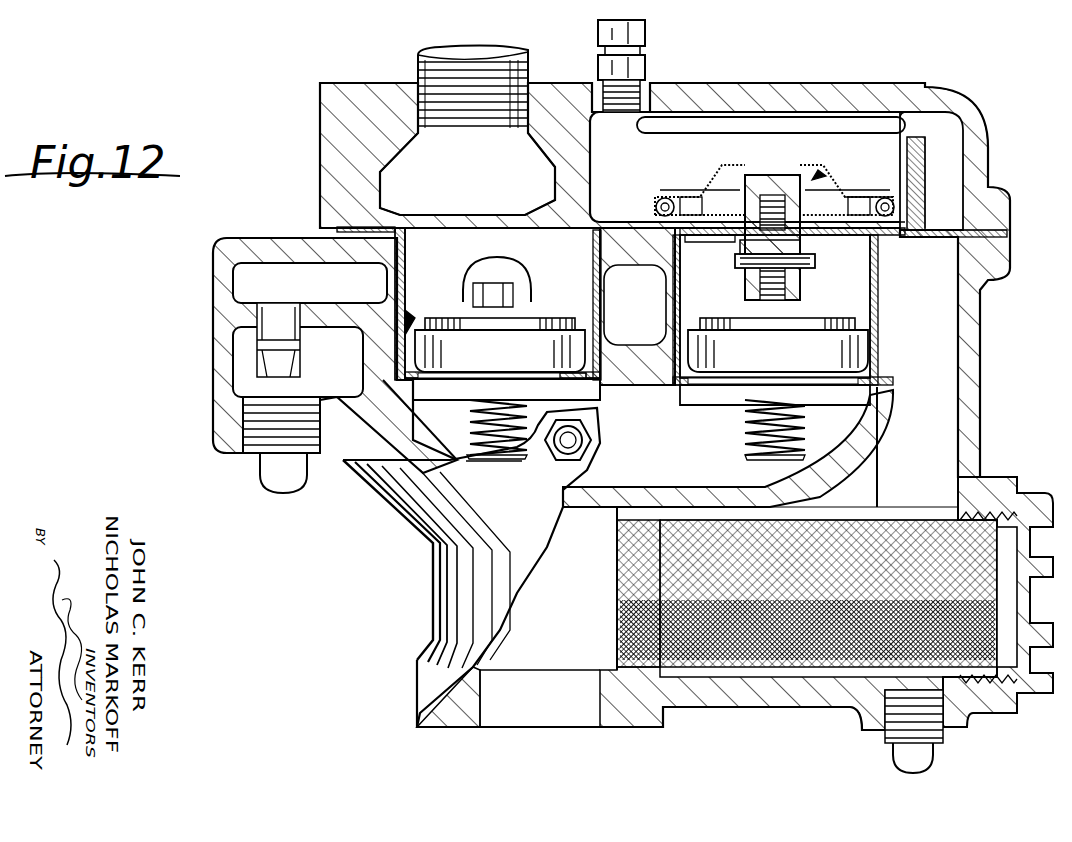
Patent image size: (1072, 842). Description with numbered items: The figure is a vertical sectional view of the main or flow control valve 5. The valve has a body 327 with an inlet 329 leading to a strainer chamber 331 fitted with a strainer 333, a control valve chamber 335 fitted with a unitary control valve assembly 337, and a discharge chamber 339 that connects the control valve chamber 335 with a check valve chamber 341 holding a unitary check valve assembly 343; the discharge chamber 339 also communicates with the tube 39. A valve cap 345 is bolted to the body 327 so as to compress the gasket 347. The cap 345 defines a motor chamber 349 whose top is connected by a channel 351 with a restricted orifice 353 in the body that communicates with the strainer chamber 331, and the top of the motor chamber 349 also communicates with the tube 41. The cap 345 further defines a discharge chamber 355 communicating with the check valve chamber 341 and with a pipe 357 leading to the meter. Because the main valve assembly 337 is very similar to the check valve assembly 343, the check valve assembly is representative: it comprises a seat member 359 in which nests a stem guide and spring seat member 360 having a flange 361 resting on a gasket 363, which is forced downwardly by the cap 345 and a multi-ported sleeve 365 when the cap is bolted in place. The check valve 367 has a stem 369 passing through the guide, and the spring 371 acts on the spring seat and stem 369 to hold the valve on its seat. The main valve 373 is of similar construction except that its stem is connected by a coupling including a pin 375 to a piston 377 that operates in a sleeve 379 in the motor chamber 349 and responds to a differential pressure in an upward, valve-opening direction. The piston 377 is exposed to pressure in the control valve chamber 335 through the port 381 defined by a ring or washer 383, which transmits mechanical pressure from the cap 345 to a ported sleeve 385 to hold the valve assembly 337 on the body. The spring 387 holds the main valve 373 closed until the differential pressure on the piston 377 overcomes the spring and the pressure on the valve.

The main or flow control valve 5 is at (985, 333).
The tube 39 is at (597, 433).
The tube 41 is at (650, 40).
The body 327 is at (982, 398).
The inlet 329 is at (598, 727).
The strainer chamber 331 is at (787, 497).
The strainer 333 is at (792, 520).
The control valve chamber 335 is at (775, 310).
The unitary control valve assembly 337 is at (868, 350).
The discharge chamber 339 is at (664, 457).
The check valve chamber 341 is at (502, 303).
The unitary check valve assembly 343 is at (408, 312).
The valve cap 345 is at (990, 155).
The gasket 347 is at (1008, 233).
The motor chamber 349 is at (771, 169).
The channel 351 is at (945, 182).
The restricted orifice 353 is at (950, 280).
The discharge chamber 355 is at (467, 174).
The pipe 357 is at (468, 50).
The seat member 359 is at (500, 345).
The stem guide and spring seat member 360 is at (565, 387).
The flange 361 is at (502, 387).
The gasket 363 is at (398, 383).
The multi-ported sleeve 365 is at (405, 245).
The check valve 367 is at (548, 305).
The stem 369 is at (470, 430).
The spring 371 is at (470, 413).
The main valve 373 is at (863, 322).
The pin 375 is at (815, 259).
The piston 377 is at (818, 170).
The sleeve 379 is at (905, 170).
The port 381 is at (695, 232).
The ring or washer 383 is at (688, 240).
The ported sleeve 385 is at (870, 276).
The spring 387 is at (745, 432).